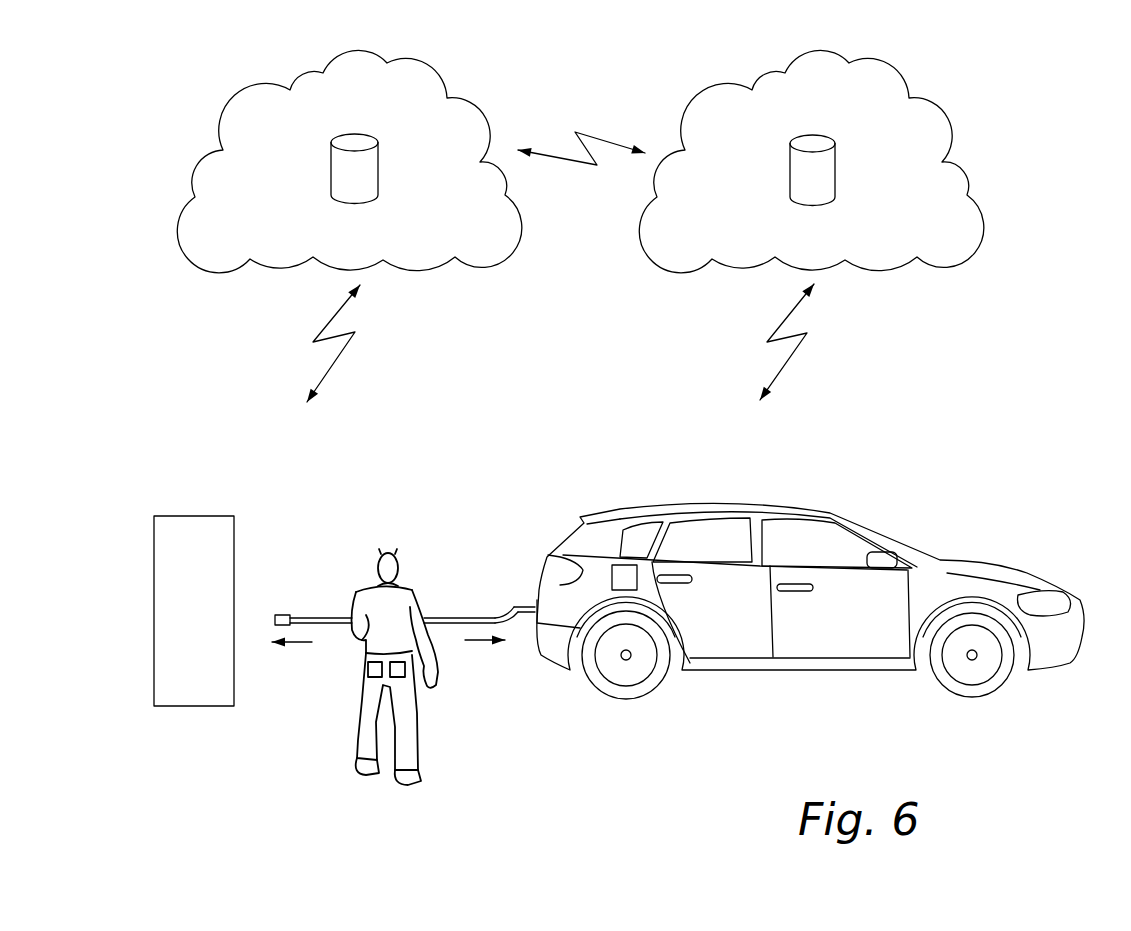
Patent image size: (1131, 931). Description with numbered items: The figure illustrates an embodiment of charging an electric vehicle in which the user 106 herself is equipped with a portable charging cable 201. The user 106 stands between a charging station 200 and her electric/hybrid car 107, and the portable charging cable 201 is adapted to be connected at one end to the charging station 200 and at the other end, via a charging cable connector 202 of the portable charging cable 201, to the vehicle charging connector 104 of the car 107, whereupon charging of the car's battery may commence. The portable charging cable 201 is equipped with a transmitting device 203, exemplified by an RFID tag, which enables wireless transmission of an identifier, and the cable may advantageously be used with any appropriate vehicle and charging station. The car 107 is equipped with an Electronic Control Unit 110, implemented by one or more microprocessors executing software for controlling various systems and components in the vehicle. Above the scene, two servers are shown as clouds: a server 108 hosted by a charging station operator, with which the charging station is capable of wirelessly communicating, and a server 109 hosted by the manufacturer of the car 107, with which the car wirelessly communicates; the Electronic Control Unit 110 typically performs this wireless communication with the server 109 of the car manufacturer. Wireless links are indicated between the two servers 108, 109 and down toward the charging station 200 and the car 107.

The vehicle charging connector 104 is at (538, 620).
The user 106 is at (413, 722).
The electric/hybrid car 107 is at (818, 515).
The server 108 is at (331, 163).
The server 109 is at (837, 157).
The Electronic Control Unit 110 is at (620, 565).
The charging station 200 is at (193, 707).
The portable charging cable 201 is at (333, 618).
The charging cable connector 202 is at (515, 610).
The transmitting device 203 is at (518, 609).